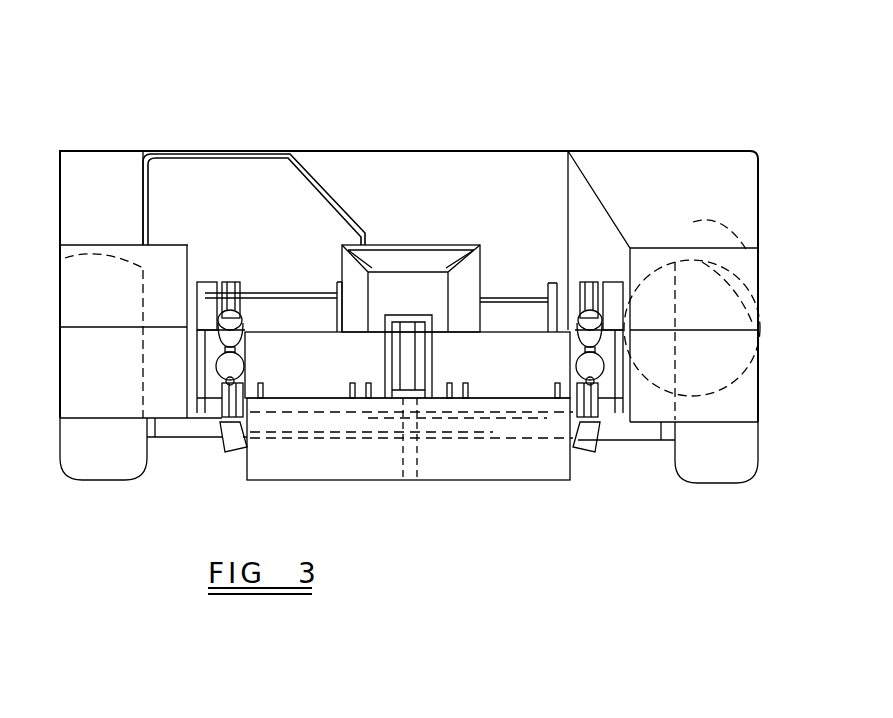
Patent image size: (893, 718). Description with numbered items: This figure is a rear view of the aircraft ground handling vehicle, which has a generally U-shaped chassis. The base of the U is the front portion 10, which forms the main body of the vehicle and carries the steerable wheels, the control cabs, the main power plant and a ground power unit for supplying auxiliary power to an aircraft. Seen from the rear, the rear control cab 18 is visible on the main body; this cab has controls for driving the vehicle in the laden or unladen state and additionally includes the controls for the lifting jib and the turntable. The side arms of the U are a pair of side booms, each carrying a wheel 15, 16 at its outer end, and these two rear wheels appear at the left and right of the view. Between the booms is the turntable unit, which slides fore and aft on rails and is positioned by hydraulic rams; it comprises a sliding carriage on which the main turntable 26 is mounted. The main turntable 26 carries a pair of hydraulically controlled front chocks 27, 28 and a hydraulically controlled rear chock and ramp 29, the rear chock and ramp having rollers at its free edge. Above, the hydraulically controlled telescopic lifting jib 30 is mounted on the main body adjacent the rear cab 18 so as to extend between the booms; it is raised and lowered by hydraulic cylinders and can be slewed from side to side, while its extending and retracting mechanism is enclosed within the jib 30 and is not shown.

The front portion 10 is at (453, 102).
The wheel 15 is at (720, 468).
The wheel 16 is at (97, 458).
The rear control cab 18 is at (245, 168).
The main turntable 26 is at (432, 407).
The front chock 27 is at (530, 382).
The front chock 28 is at (280, 372).
The rear chock and ramp 29 is at (293, 463).
The telescopic lifting jib 30 is at (443, 255).